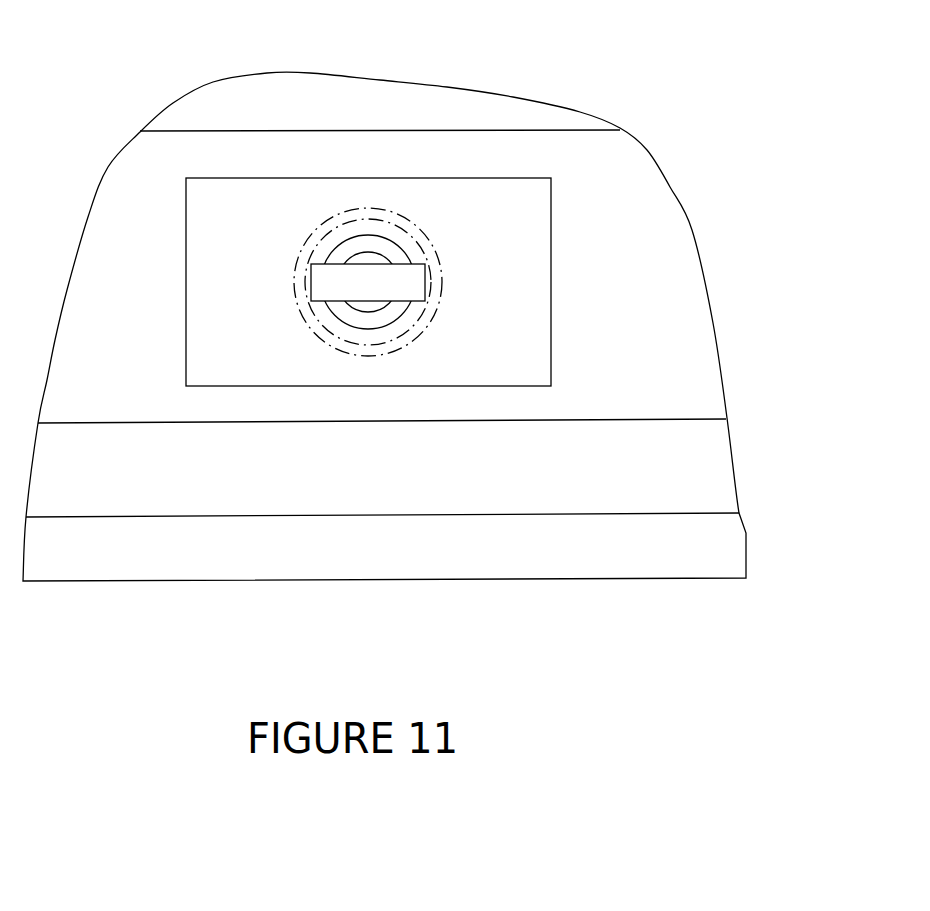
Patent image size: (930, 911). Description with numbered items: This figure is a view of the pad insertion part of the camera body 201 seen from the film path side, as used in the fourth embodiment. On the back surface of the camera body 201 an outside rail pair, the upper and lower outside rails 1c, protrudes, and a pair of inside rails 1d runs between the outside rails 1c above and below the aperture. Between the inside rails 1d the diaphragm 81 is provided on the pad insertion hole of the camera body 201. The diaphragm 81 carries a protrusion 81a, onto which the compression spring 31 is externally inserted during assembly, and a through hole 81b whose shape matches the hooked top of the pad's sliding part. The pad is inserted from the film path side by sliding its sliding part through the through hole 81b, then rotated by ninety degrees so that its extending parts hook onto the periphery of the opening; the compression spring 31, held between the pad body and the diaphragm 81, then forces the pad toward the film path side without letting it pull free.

The camera body 201 is at (670, 222).
The inside rails 1d is at (430, 121).
The outside rails 1c is at (358, 478).
The diaphragm 81 is at (534, 213).
The compression spring 31 is at (418, 226).
The protrusion 81a is at (390, 316).
The through hole 81b is at (325, 279).